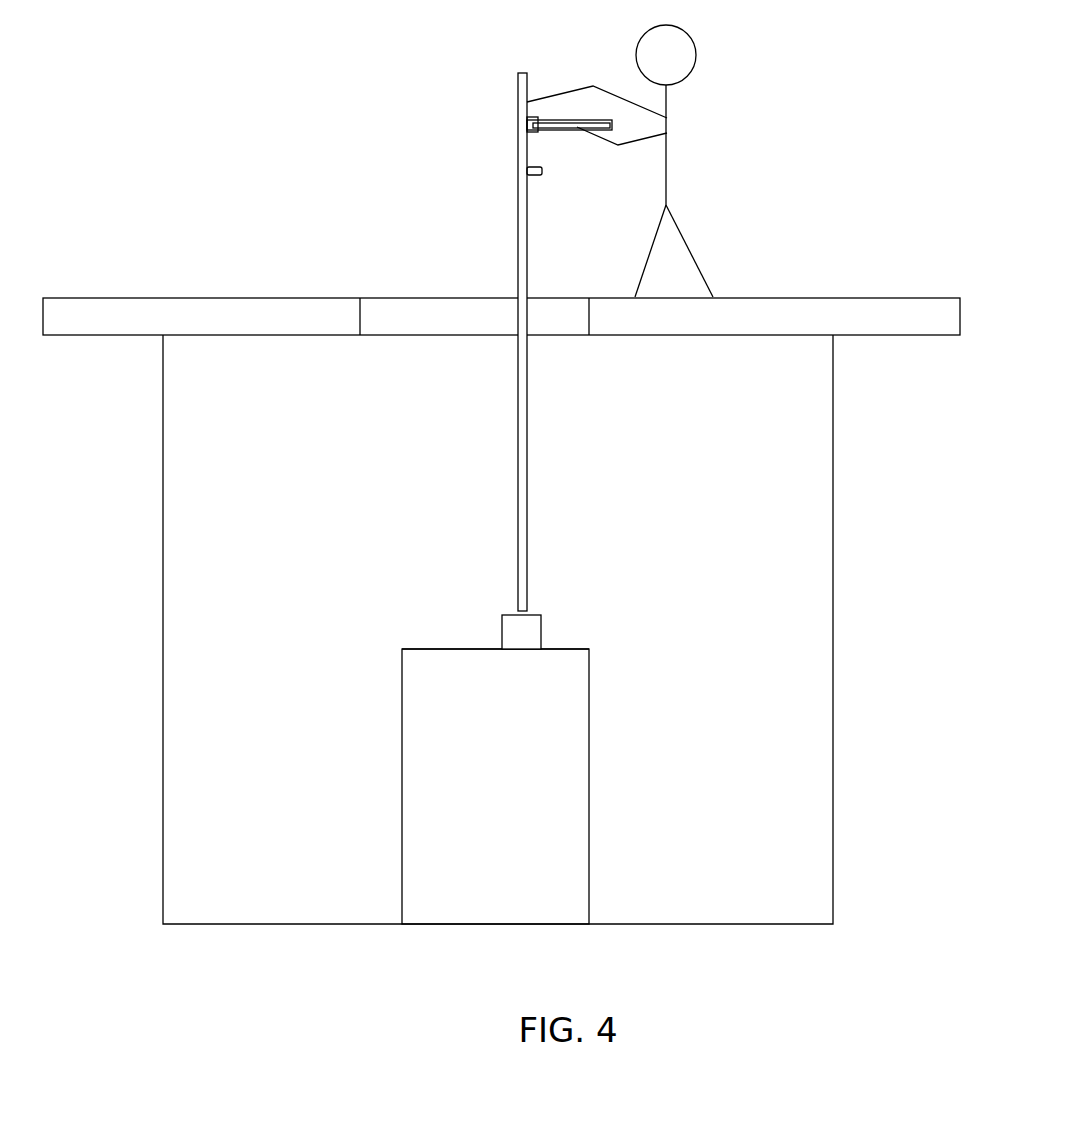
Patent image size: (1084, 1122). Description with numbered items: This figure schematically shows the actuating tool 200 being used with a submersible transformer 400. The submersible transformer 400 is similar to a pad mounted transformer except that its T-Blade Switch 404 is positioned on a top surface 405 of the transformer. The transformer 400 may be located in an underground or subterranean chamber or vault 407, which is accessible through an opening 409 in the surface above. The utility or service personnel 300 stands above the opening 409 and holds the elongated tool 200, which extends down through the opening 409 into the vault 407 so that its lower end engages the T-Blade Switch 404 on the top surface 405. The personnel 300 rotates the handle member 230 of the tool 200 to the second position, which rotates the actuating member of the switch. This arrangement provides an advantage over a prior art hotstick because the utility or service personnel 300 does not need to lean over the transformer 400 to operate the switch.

The tool 200 is at (527, 395).
The handle member 230 is at (572, 117).
The utility or service personnel 300 is at (697, 118).
The submersible transformer 400 is at (590, 782).
The T-Blade Switch 404 is at (543, 628).
The top surface 405 is at (457, 650).
The chamber or vault 407 is at (223, 719).
The opening 409 is at (413, 316).